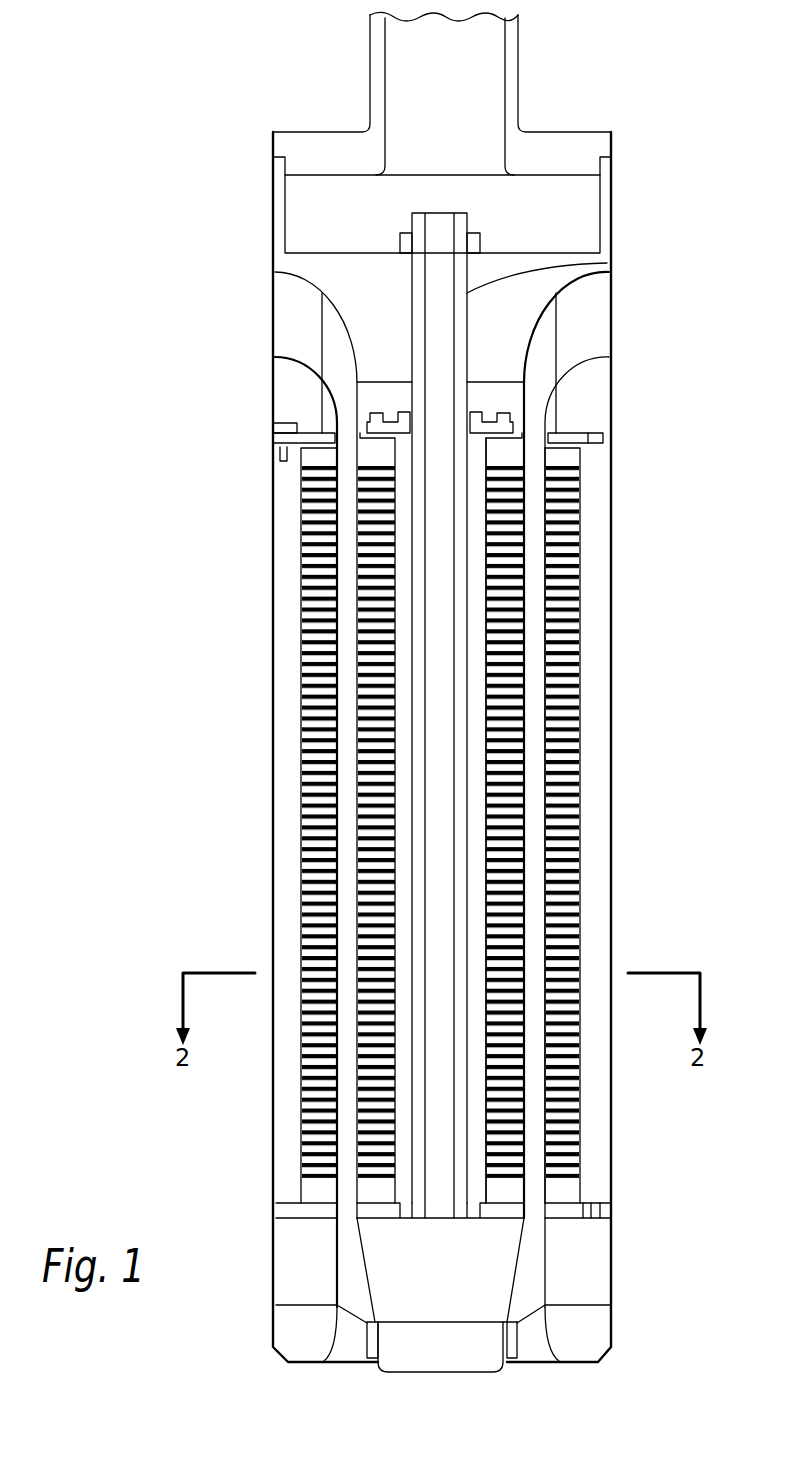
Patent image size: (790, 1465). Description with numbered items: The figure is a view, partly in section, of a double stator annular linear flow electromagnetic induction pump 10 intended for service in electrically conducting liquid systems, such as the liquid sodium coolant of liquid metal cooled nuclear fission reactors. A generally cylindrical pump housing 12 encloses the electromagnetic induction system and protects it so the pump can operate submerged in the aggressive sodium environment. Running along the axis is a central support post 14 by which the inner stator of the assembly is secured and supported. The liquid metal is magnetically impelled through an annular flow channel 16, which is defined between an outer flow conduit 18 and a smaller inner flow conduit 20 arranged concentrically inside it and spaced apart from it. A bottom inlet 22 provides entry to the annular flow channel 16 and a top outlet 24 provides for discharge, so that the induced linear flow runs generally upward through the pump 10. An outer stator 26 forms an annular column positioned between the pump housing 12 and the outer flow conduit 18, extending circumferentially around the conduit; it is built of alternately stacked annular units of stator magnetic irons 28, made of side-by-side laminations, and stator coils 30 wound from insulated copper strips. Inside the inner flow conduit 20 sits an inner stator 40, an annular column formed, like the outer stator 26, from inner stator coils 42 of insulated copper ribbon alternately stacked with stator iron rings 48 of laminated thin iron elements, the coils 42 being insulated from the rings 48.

The double stator annular linear flow electromagnetic induction pump 10 is at (252, 754).
The pump housing 12 is at (613, 645).
The central support post 14 is at (606, 265).
The annular flow channel 16 is at (532, 493).
The outer flow conduit 18 is at (546, 551).
The inner flow conduit 20 is at (523, 595).
The inlet 22 is at (532, 1328).
The outlet 24 is at (590, 318).
The outer stator 26 is at (573, 1167).
The stator magnetic irons 28 is at (570, 1090).
The stator coils 30 is at (555, 1128).
The inner stator 40 is at (523, 703).
The inner stator coils 42 is at (503, 817).
The stator iron rings 48 is at (490, 770).